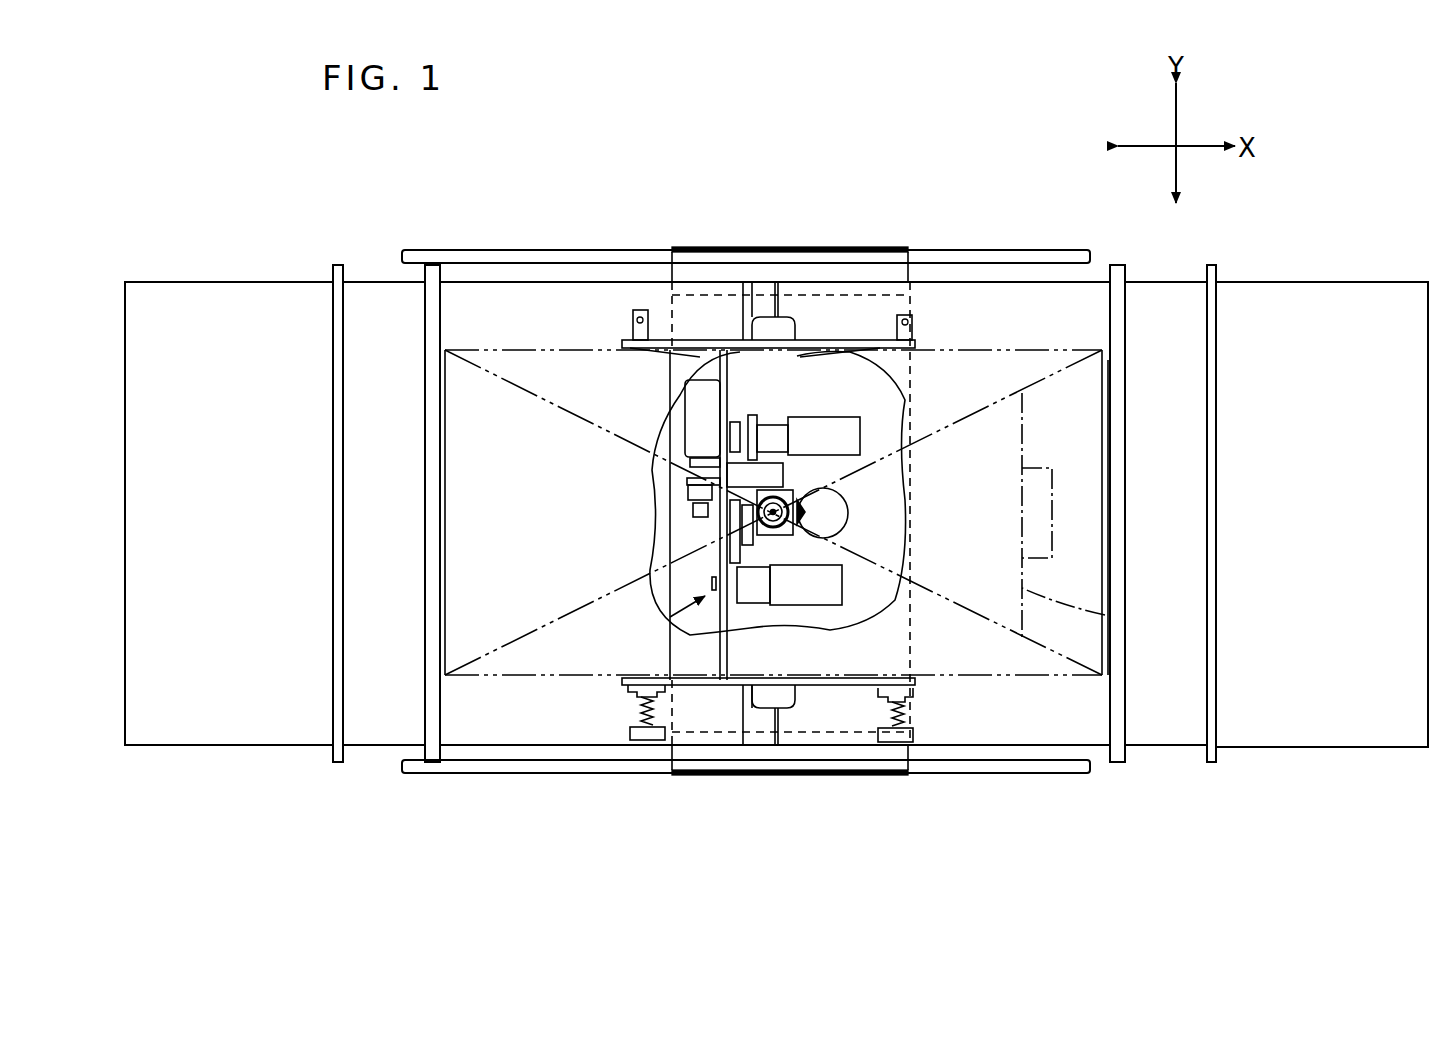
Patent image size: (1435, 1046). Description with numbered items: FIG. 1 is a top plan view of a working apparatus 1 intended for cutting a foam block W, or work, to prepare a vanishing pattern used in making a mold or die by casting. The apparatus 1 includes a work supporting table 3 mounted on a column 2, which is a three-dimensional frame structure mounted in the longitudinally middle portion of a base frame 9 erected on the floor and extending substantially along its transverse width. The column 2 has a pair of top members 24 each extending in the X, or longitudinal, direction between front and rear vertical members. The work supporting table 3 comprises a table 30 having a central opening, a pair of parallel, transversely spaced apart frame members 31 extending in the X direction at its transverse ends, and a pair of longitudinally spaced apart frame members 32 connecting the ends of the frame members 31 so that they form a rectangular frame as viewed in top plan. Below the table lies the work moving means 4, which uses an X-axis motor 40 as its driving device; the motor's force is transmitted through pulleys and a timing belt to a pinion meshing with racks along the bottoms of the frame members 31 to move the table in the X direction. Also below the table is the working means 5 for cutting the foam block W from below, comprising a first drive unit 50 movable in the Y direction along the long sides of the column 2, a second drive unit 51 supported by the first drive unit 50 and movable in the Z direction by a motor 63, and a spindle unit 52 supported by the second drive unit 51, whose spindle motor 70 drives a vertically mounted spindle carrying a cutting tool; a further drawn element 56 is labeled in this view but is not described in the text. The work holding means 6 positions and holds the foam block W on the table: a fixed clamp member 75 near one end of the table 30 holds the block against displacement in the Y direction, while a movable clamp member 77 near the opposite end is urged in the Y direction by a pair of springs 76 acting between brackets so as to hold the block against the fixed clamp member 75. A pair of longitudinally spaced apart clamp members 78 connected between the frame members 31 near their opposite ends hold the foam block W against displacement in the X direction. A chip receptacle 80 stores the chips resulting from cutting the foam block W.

The apparatus 1 is at (940, 193).
The column 2 is at (816, 246).
The work supporting table 3 is at (380, 263).
The work moving means 4 is at (663, 471).
The working means 5 is at (778, 612).
The work holding means 6 is at (632, 712).
The base frame 9 is at (1358, 284).
The top members 24 is at (715, 248).
The table 30 is at (995, 295).
The frame members 31 is at (1090, 273).
The frame members 32 is at (341, 411).
The X-axis motor 40 is at (690, 412).
The first drive unit 50 is at (670, 617).
The second drive unit 51 is at (768, 408).
The spindle unit 52 is at (778, 540).
The lower motor 56 is at (845, 590).
The motor 63 is at (825, 432).
The spindle motor 70 is at (843, 525).
The fixed clamp member 75 is at (868, 340).
The springs 76 is at (665, 742).
The movable clamp member 77 is at (840, 687).
The clamp members 78 is at (432, 550).
The chip receptacle 80 is at (1105, 623).
The foam block W is at (508, 668).